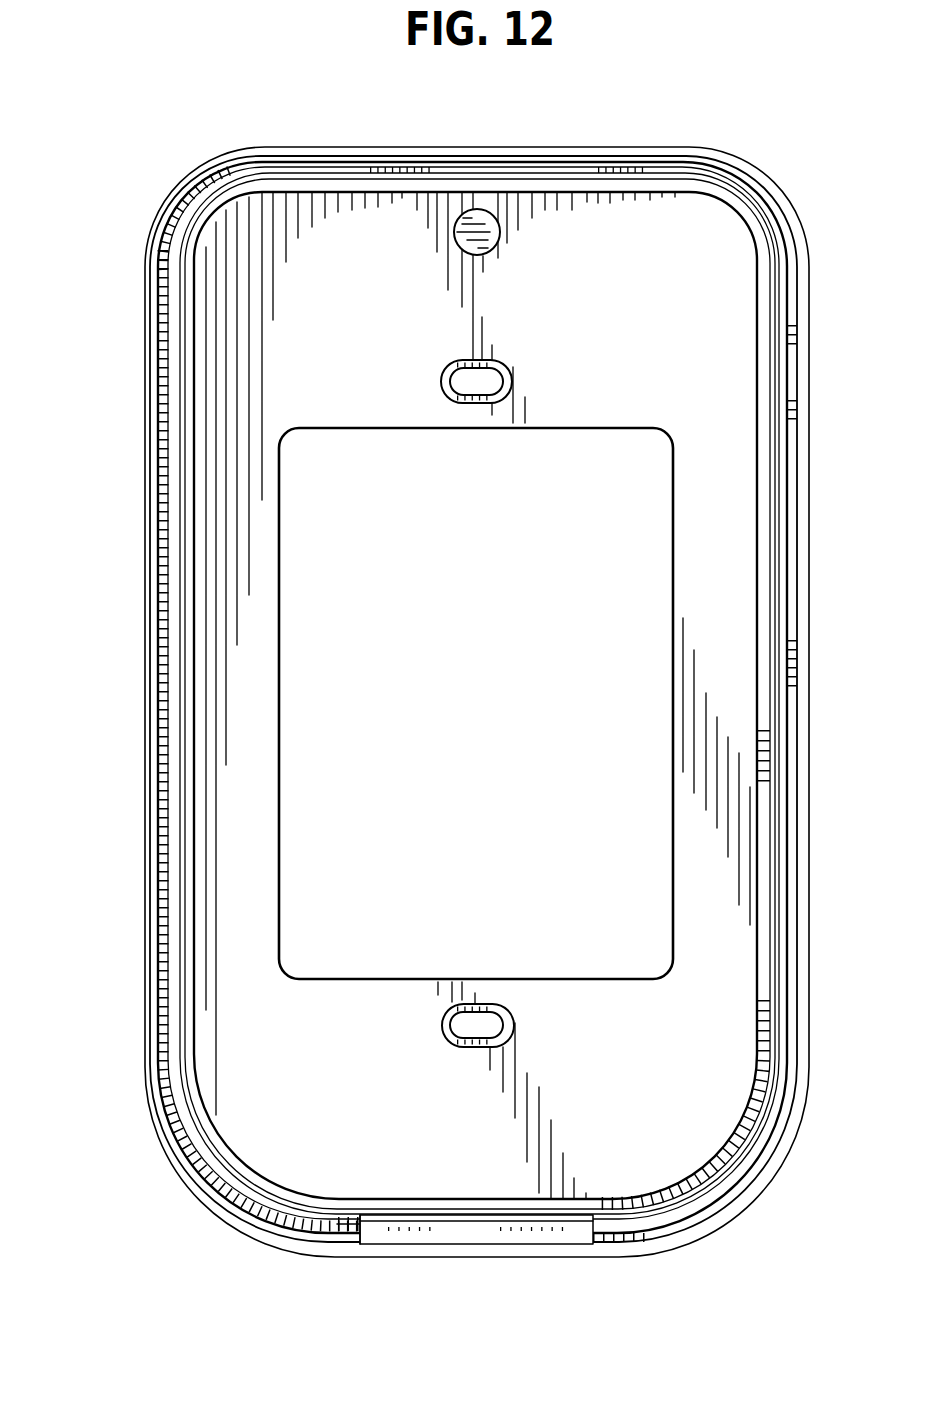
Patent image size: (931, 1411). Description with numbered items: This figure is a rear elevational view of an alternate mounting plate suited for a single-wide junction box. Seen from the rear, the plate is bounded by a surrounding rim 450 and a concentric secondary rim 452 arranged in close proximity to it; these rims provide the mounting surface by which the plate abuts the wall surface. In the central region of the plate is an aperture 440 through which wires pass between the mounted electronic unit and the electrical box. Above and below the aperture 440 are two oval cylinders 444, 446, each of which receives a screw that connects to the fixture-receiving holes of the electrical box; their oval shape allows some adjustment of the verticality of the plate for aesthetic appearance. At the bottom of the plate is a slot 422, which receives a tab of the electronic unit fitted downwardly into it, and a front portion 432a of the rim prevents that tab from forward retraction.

The surrounding rim 450 is at (251, 157).
The concentric secondary rim 452 is at (202, 220).
The aperture 440 is at (283, 825).
The oval cylinder 444 is at (452, 402).
The oval cylinder 446 is at (508, 1008).
The front portion of the rim 432a is at (486, 1236).
The slot 422 is at (362, 1237).